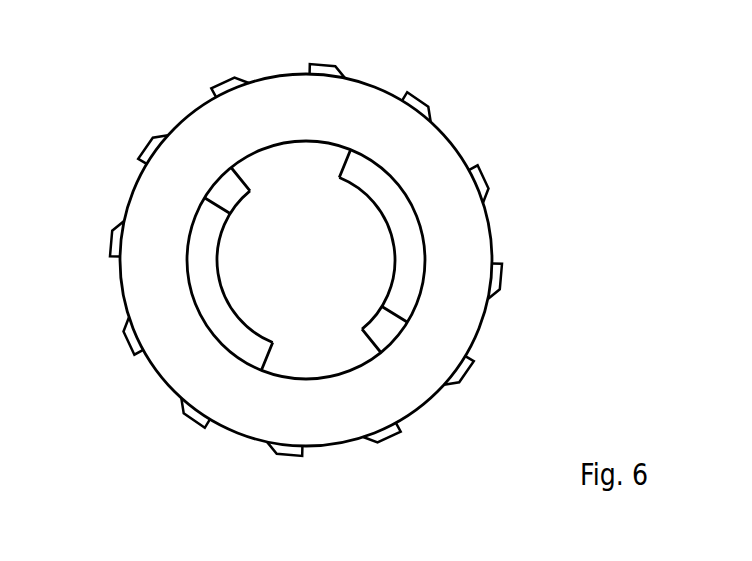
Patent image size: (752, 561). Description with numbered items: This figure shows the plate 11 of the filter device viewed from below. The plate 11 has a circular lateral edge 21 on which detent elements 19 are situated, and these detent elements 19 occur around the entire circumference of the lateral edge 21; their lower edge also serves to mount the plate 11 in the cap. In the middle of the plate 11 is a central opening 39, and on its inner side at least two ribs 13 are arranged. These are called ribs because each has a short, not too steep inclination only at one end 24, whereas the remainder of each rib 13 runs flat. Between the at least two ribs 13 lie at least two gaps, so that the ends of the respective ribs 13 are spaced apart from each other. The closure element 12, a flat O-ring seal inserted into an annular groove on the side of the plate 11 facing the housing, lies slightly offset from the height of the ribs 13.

The plate 11 is at (500, 171).
The closure element 12 is at (455, 308).
The ribs 13 is at (382, 192).
The detent elements 19 is at (140, 145).
The lateral edge 21 is at (188, 112).
The end 24 is at (232, 190).
The central opening 39 is at (328, 276).